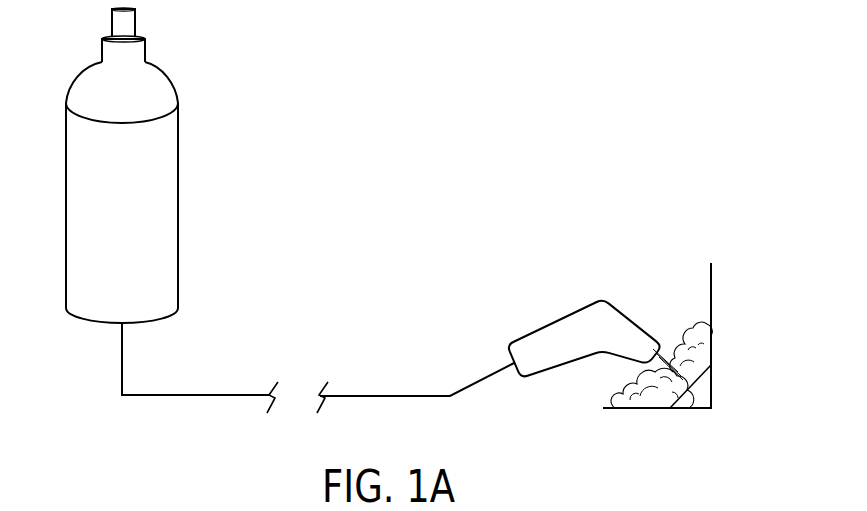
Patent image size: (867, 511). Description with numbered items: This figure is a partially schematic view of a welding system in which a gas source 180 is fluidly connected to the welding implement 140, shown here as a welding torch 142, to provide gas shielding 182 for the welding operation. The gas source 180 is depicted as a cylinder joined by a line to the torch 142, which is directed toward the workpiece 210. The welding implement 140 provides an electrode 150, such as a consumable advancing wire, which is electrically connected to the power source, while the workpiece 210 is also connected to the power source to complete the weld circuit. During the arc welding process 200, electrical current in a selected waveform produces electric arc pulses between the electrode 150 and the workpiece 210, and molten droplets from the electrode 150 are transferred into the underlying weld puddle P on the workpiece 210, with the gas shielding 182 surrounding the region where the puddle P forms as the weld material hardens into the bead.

The gas source 180 is at (162, 168).
The welding implement 140 is at (565, 304).
The welding torch 142 is at (527, 365).
The gas shielding 182 is at (688, 326).
The workpiece 210 is at (721, 323).
The electrode 150 is at (693, 408).
The weld puddle P is at (702, 383).
The arc welding process 200 is at (632, 408).